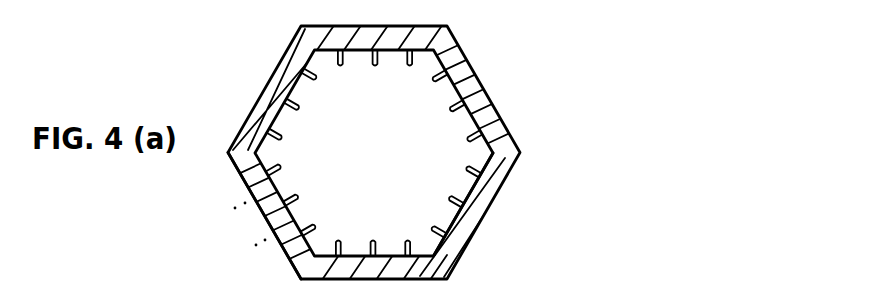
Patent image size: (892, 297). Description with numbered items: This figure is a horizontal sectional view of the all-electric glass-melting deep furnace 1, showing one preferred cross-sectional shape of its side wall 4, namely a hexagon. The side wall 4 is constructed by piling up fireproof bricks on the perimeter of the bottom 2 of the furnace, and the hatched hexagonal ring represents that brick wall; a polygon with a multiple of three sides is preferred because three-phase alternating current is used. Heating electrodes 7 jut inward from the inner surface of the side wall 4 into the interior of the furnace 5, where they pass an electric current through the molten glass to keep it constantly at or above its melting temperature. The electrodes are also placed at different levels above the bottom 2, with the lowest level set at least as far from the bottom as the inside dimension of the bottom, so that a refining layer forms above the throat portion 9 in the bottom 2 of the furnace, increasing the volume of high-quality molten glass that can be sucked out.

The all-electric glass-melting deep furnace 1 is at (515, 68).
The bottom 2 is at (266, 118).
The side wall 4 is at (237, 182).
The furnace 5 is at (448, 182).
The heating electrodes 7 is at (284, 139).
The throat portion 9 is at (250, 248).